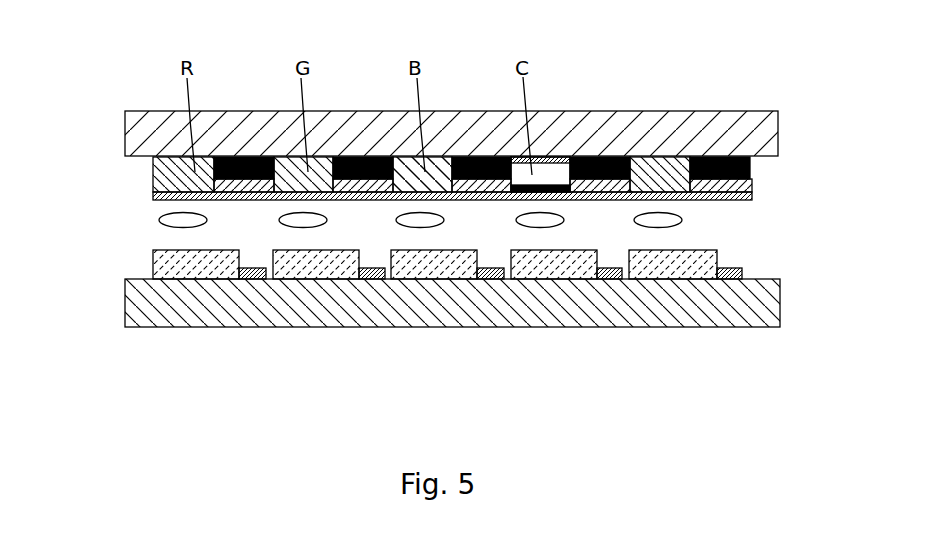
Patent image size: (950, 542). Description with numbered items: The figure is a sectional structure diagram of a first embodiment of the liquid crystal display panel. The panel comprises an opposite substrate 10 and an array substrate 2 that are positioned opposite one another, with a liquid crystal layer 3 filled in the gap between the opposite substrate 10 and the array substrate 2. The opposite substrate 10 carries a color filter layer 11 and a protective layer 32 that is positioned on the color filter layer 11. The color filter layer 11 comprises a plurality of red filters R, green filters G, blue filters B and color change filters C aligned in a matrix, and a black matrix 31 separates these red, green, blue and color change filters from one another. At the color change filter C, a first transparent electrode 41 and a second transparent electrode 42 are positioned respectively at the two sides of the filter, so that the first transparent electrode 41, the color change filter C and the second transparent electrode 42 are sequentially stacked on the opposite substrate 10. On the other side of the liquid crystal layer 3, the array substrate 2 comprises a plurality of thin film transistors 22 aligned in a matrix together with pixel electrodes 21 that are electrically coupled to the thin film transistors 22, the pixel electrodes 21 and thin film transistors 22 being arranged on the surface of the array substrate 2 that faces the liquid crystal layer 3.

The array substrate 2 is at (713, 305).
The liquid crystal layer 3 is at (192, 222).
The opposite substrate 10 is at (735, 136).
The color filter layer 11 is at (492, 112).
The pixel electrode 21 is at (180, 262).
The thin film transistor 22 is at (254, 278).
The black matrix 31 is at (750, 165).
The protective layer 32 is at (727, 191).
The first transparent electrode 41 is at (548, 162).
The second transparent electrode 42 is at (567, 183).